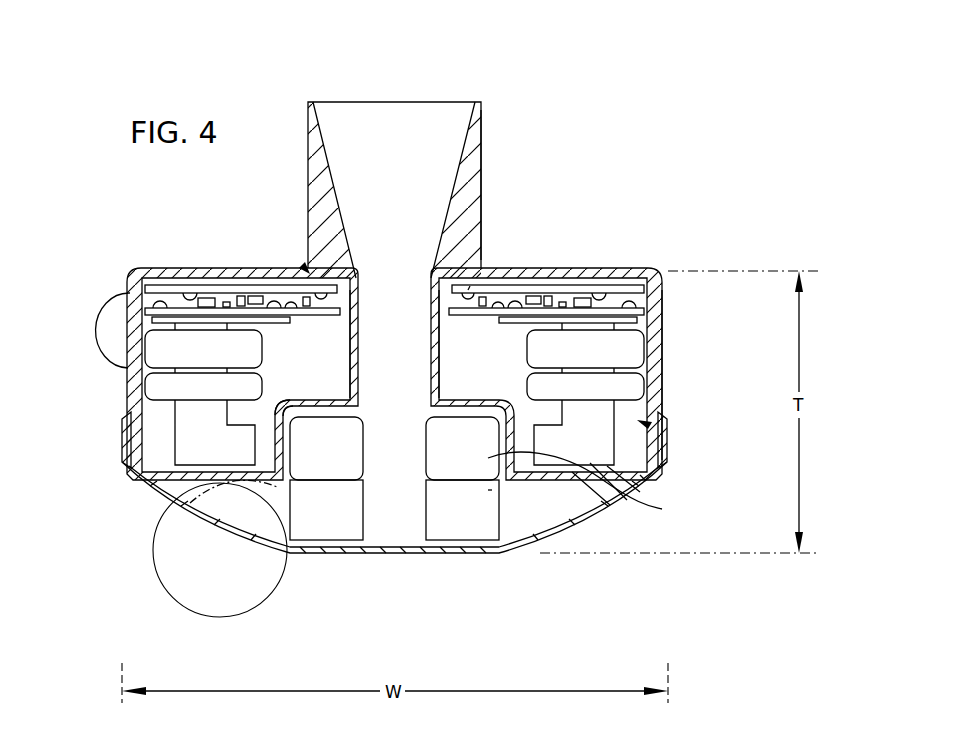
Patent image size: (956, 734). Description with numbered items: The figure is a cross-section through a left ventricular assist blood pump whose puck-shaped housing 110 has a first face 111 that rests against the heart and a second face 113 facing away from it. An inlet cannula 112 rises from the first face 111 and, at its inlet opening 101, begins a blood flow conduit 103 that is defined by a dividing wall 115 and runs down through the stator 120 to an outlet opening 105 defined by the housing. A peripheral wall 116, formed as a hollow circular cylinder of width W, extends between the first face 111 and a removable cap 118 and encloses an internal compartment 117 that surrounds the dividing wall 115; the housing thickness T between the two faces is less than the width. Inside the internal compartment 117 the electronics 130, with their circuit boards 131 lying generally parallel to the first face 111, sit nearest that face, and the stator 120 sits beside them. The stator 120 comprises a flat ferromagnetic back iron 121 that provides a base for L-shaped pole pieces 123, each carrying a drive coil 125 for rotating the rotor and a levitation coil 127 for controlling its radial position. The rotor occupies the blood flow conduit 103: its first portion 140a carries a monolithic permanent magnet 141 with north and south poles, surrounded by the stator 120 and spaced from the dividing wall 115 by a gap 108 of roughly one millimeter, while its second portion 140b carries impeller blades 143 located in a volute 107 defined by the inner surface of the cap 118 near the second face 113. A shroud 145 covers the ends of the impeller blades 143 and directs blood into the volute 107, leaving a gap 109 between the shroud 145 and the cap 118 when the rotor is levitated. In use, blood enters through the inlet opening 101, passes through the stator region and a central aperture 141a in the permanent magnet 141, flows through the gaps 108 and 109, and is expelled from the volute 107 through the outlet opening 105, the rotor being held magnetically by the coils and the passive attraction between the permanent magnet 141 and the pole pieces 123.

The inlet opening 101 is at (433, 100).
The blood flow conduit 103 is at (410, 270).
The outlet opening 105 is at (222, 510).
The volute 107 is at (590, 498).
The gap 108 is at (342, 413).
The gap 109 is at (310, 547).
The housing 110 is at (123, 382).
The first face 111 is at (560, 270).
The inlet cannula 112 is at (482, 175).
The second face 113 is at (533, 550).
The dividing wall 115 is at (438, 367).
The peripheral wall 116 is at (663, 312).
The internal compartment 117 is at (328, 352).
The removable cap 118 is at (143, 487).
The stator 120 is at (660, 430).
The back iron 121 is at (150, 320).
The pole piece 123 is at (183, 443).
The drive coil 125 is at (647, 348).
The levitation coil 127 is at (648, 387).
The electronics 130 is at (300, 263).
The circuit board 131 is at (468, 290).
The first portion of the rotor 140a is at (643, 478).
The second portion of the rotor 140b is at (488, 490).
The permanent magnet 141 is at (343, 458).
The central aperture 141a is at (403, 456).
The impeller blades 143 is at (458, 520).
The shroud 145 is at (343, 543).